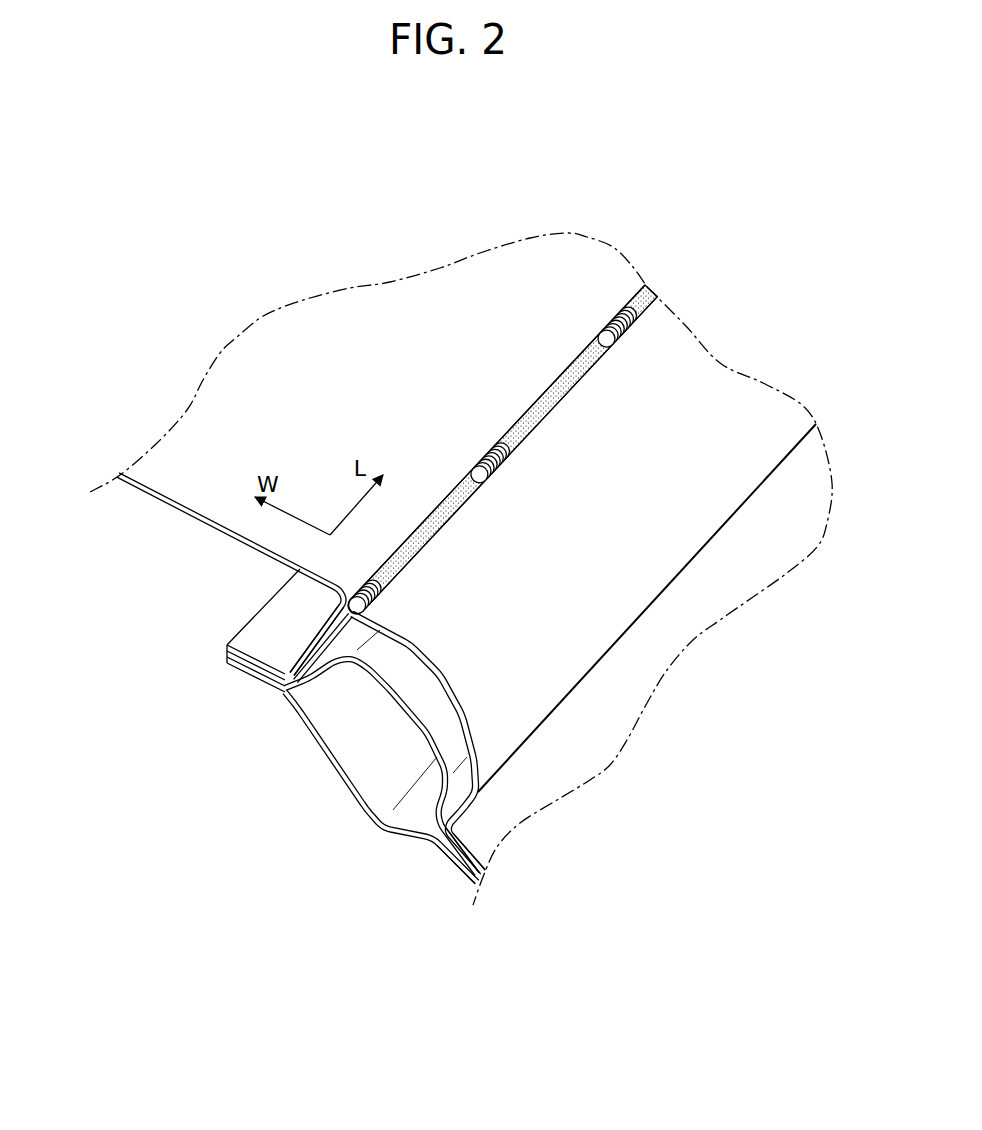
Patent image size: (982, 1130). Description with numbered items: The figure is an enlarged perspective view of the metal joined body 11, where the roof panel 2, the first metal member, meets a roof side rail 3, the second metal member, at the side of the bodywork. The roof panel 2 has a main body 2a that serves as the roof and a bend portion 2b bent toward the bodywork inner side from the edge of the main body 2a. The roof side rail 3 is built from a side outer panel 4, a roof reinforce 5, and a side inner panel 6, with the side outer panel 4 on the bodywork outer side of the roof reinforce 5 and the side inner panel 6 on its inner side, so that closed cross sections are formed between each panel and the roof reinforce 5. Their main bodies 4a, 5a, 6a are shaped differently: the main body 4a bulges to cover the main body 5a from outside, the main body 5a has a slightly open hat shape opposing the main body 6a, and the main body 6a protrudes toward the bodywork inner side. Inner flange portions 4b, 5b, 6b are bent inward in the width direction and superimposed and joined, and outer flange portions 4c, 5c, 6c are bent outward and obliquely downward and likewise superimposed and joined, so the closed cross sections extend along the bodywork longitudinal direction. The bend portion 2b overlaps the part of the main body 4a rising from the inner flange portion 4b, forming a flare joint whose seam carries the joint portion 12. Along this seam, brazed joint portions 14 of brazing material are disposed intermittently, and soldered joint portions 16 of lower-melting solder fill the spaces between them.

The roof panel 2 is at (272, 350).
The main body 2a is at (153, 492).
The bend portion 2b is at (300, 628).
The roof side rail 3 is at (587, 998).
The side outer panel 4 is at (543, 668).
The main body 4a is at (420, 647).
The inner flange portion 4b is at (255, 633).
The outer flange portion 4c is at (485, 852).
The roof reinforce 5 is at (439, 711).
The main body 5a is at (400, 710).
The inner flange portion 5b is at (227, 657).
The outer flange portion 5c is at (485, 870).
The side inner panel 6 is at (379, 786).
The main body 6a is at (340, 773).
The inner flange portion 6b is at (258, 680).
The outer flange portion 6c is at (470, 882).
The metal joined body 11 is at (722, 268).
The joint portion 12 is at (599, 322).
The brazed joint portion 14 is at (614, 335).
The soldered joint portion 16 is at (632, 312).